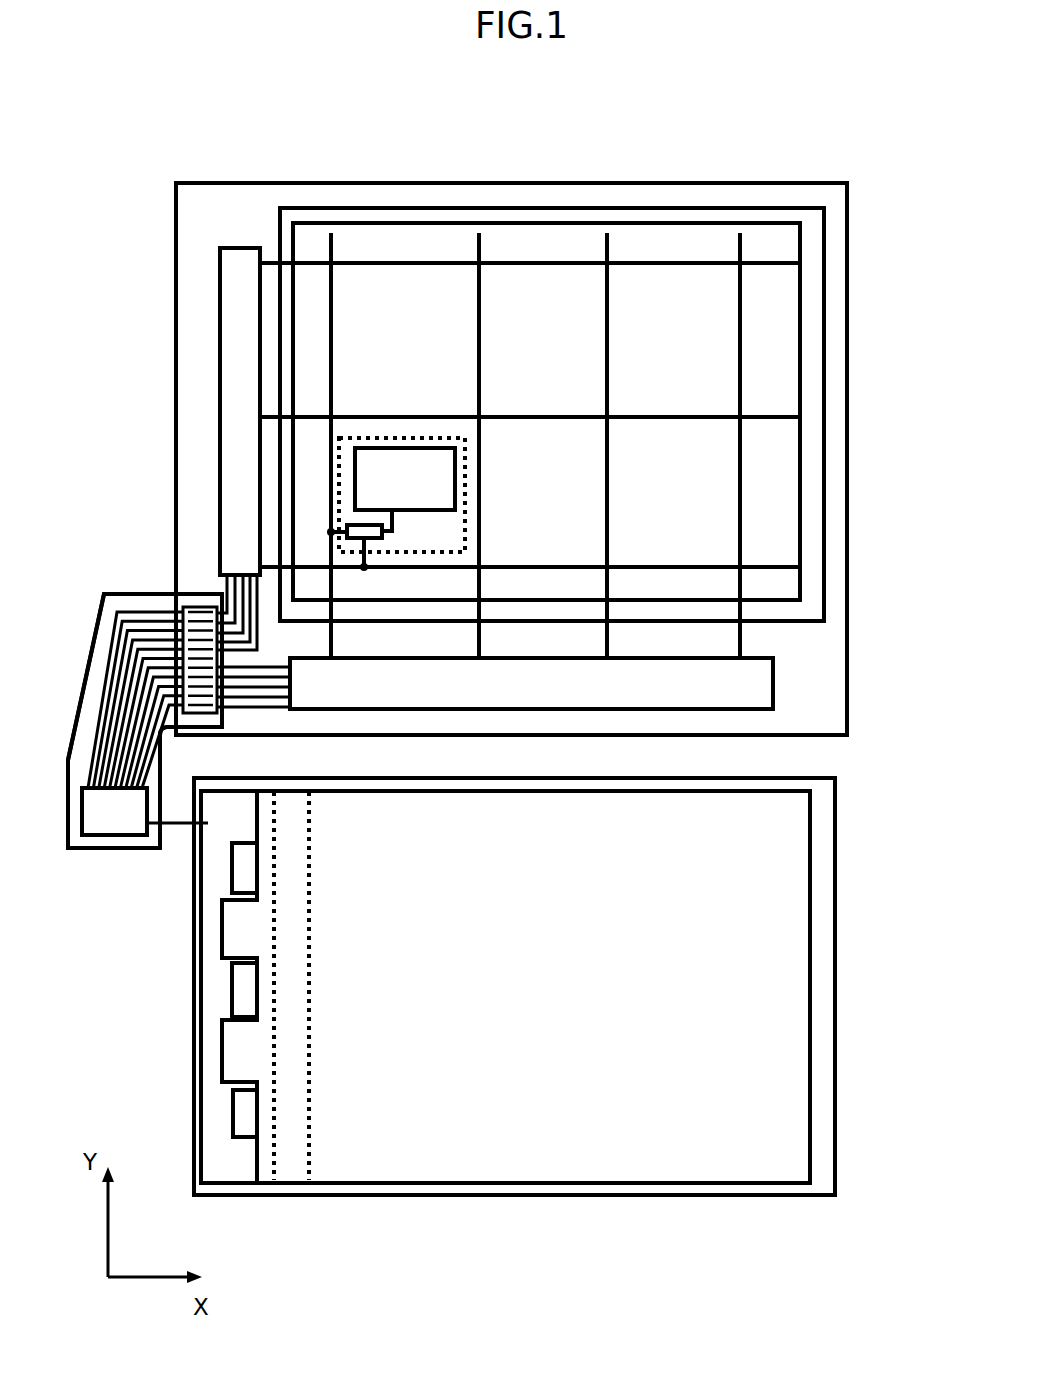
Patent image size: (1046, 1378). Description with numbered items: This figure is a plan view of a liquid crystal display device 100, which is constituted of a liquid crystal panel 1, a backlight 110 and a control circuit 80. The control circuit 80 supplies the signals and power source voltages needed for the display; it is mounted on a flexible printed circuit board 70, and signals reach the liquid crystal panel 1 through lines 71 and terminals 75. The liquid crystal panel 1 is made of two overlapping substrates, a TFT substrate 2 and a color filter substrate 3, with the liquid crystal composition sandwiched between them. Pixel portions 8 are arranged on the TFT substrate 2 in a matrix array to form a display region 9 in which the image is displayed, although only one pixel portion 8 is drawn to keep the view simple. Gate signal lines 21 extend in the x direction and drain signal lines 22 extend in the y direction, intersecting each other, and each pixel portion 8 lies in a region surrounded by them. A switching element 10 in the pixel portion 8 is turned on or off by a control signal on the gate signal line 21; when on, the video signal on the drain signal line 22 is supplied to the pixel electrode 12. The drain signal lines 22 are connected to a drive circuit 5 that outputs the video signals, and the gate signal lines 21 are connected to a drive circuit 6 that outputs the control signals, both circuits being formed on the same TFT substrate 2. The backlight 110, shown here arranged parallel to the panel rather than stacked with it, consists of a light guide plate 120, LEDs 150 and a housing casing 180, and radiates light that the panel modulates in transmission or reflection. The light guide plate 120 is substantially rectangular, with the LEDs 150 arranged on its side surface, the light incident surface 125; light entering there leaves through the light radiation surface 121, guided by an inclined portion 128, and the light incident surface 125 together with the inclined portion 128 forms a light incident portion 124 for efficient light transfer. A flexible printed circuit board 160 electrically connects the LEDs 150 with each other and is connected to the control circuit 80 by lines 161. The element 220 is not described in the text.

The liquid crystal panel 1 is at (527, 185).
The TFT substrate 2 is at (288, 187).
The color filter substrate 3 is at (368, 210).
The drive circuit 5 is at (773, 677).
The drive circuit 6 is at (232, 250).
The pixel portion 8 is at (467, 462).
The display region 9 is at (655, 222).
The switching element 10 is at (382, 538).
The pixel electrode 12 is at (417, 480).
The gate signal line 21 is at (530, 415).
The drain signal line 22 is at (333, 357).
The flexible printed circuit board 70 is at (137, 600).
The lines 71 is at (113, 594).
The terminals 75 is at (198, 605).
The control circuit 80 is at (107, 825).
The liquid crystal display device 100 is at (548, 1232).
The backlight 110 is at (612, 1198).
The light guide plate 120 is at (750, 1182).
The light radiation surface 121 is at (662, 1087).
The light incident portion 124 is at (269, 1160).
The light incident surface 125 is at (253, 987).
The inclined portion 128 is at (300, 1160).
The LED 150 is at (233, 1112).
The flexible printed circuit board 160 is at (210, 1050).
The lines 161 is at (180, 830).
The housing casing 180 is at (417, 1187).
The light source mounting portion 220 is at (240, 935).